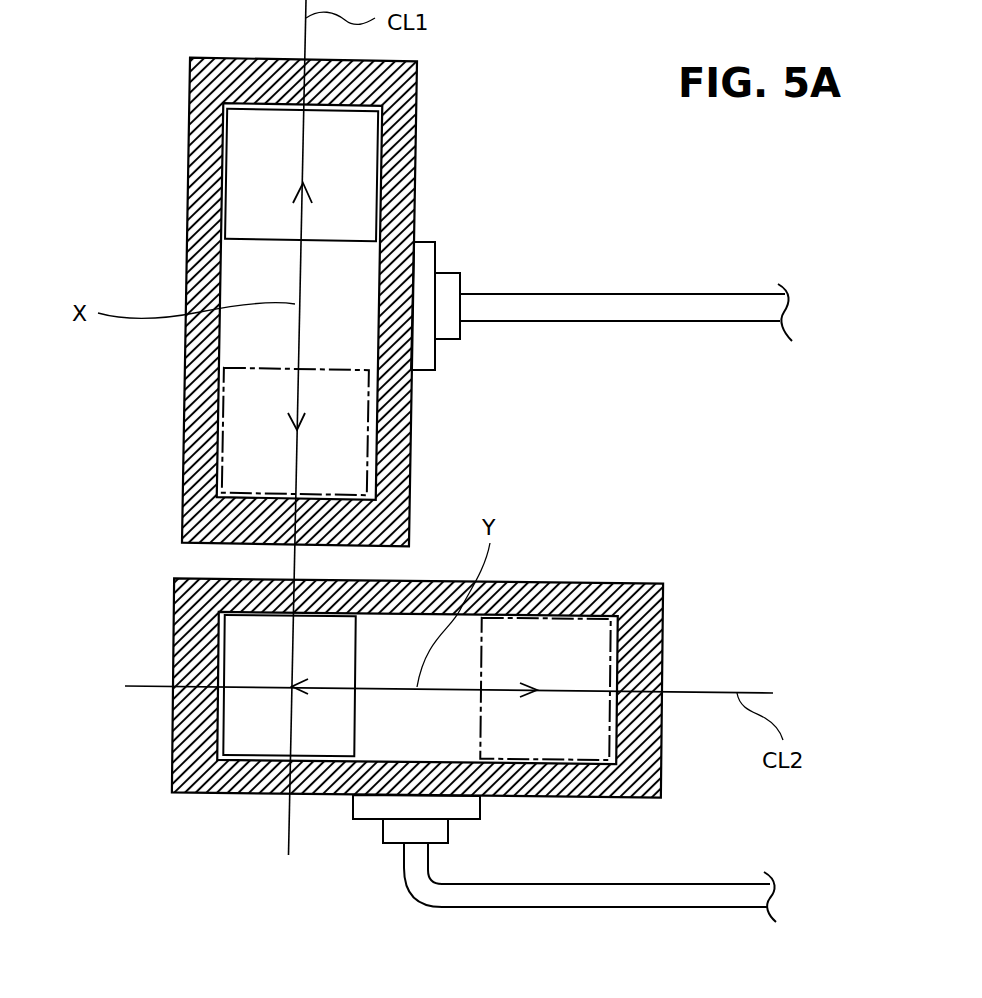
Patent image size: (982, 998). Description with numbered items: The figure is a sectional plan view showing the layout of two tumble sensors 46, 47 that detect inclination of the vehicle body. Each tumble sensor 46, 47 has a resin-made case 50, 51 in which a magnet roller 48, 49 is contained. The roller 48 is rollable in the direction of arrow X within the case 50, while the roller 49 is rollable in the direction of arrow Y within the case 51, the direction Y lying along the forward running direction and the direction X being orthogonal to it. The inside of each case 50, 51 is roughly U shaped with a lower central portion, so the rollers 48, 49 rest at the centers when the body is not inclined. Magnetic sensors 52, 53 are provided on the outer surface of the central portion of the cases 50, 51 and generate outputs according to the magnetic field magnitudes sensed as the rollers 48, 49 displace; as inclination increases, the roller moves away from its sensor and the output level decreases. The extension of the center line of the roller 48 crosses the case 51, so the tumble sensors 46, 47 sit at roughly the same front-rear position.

The tumble sensor 46 is at (424, 126).
The tumble sensor 47 is at (669, 610).
The magnet roller 48 is at (240, 177).
The magnet roller 49 is at (243, 753).
The case 50 is at (193, 510).
The case 51 is at (183, 763).
The magnetic sensor 52 is at (427, 263).
The magnetic sensor 53 is at (367, 813).